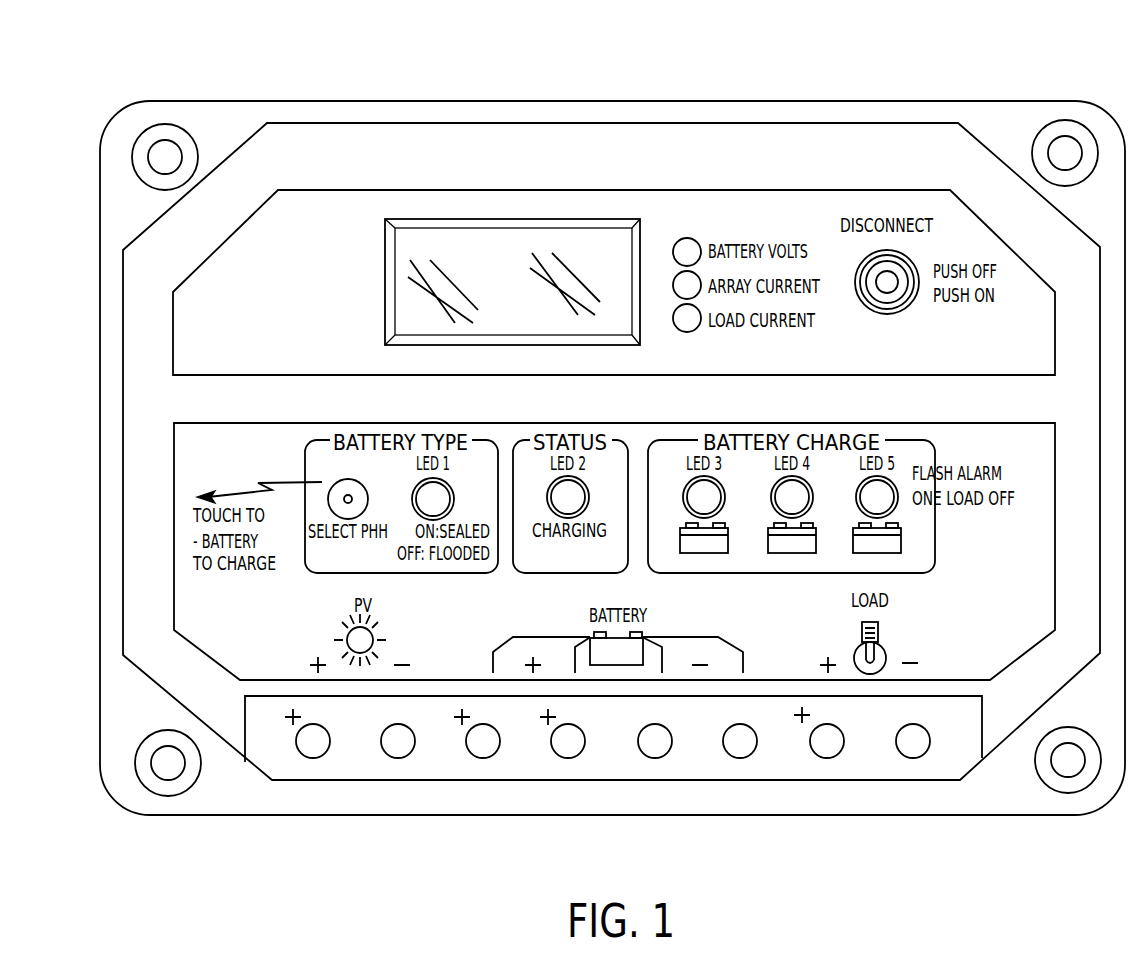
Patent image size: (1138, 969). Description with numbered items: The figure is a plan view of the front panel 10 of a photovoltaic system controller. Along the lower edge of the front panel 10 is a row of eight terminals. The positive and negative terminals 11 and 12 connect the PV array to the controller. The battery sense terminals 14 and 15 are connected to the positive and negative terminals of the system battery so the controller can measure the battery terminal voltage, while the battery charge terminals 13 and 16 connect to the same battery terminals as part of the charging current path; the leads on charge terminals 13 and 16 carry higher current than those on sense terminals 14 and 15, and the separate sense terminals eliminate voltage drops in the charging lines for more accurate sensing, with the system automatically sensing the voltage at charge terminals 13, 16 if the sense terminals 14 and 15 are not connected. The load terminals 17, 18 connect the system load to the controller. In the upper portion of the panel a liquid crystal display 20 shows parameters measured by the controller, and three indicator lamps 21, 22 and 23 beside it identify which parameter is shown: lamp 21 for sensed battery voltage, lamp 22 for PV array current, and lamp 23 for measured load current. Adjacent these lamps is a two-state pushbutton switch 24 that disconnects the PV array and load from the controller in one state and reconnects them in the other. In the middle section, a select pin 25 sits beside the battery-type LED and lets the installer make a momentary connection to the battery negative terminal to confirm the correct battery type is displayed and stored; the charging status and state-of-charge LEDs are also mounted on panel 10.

The front panel 10 is at (1011, 82).
The positive terminal 11 is at (313, 758).
The negative terminal 12 is at (396, 758).
The battery charge terminal 13 is at (483, 758).
The battery sense terminal 14 is at (573, 758).
The battery sense terminal 15 is at (655, 758).
The battery charge terminal 16 is at (745, 758).
The load terminal 17 is at (838, 757).
The load terminal 18 is at (918, 756).
The liquid crystal display 20 is at (421, 248).
The indicator lamp 21 is at (698, 238).
The indicator lamp 22 is at (675, 278).
The indicator lamp 23 is at (687, 333).
The two-state pushbutton switch 24 is at (905, 312).
The select pin 25 is at (337, 483).